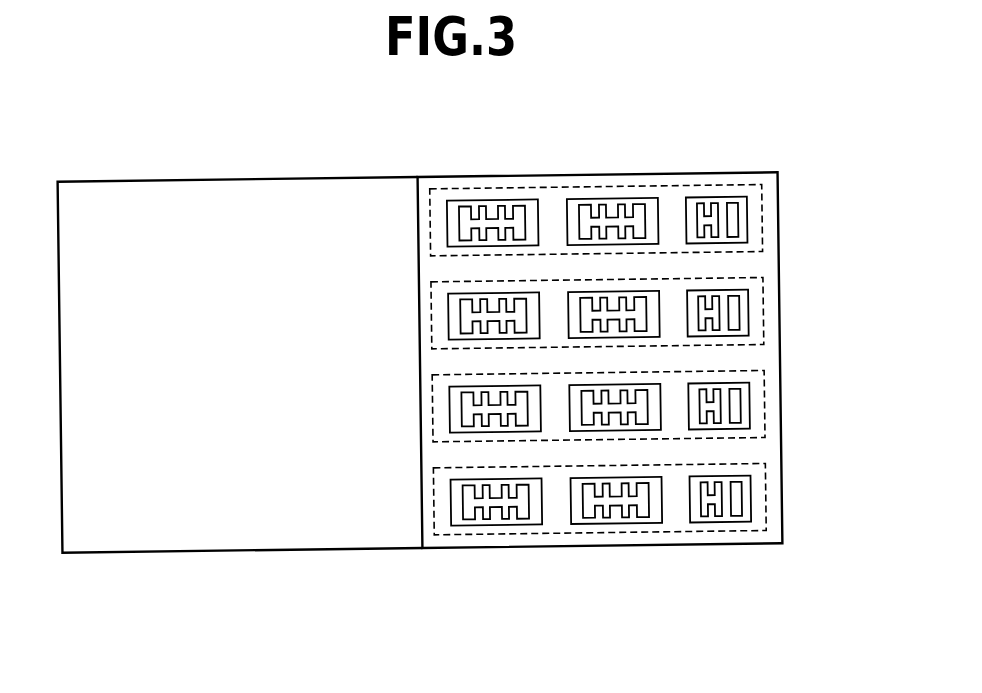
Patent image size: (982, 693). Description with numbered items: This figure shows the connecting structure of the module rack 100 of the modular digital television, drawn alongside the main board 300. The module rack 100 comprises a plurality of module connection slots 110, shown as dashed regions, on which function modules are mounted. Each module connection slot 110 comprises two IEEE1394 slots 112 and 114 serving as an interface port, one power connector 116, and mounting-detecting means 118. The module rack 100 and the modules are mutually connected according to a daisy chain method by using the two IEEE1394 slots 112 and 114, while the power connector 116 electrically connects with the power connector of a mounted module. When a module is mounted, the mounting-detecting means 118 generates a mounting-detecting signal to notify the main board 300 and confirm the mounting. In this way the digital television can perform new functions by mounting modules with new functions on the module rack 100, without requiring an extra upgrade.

The module rack 100 is at (658, 548).
The module connection slot 110 is at (766, 210).
The IEEE1394 slot 112 is at (495, 201).
The IEEE1394 slot 114 is at (614, 202).
The power connector 116 is at (717, 201).
The mounting-detecting means 118 is at (736, 207).
The main board 300 is at (226, 520).